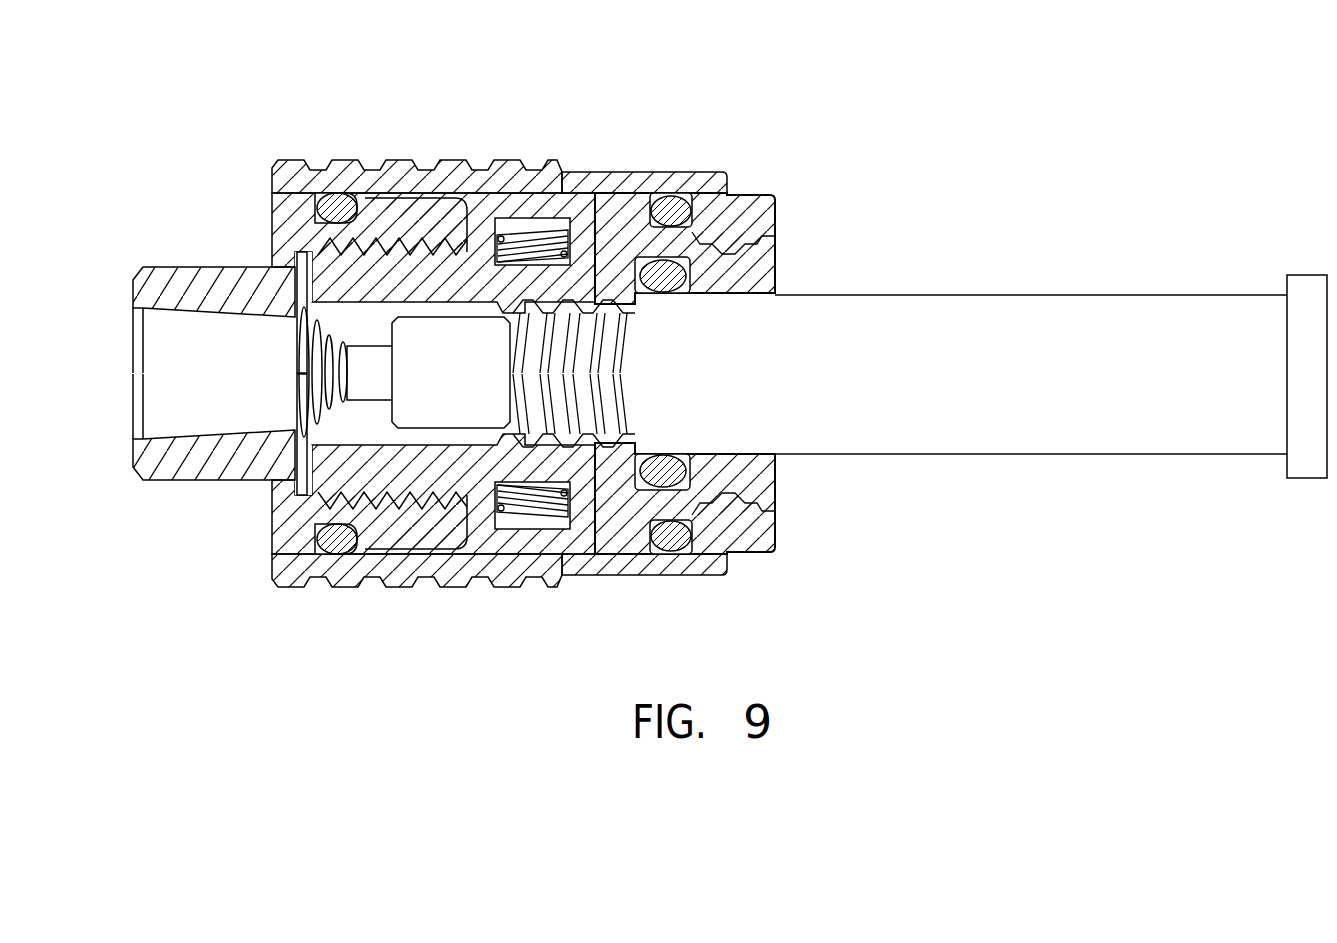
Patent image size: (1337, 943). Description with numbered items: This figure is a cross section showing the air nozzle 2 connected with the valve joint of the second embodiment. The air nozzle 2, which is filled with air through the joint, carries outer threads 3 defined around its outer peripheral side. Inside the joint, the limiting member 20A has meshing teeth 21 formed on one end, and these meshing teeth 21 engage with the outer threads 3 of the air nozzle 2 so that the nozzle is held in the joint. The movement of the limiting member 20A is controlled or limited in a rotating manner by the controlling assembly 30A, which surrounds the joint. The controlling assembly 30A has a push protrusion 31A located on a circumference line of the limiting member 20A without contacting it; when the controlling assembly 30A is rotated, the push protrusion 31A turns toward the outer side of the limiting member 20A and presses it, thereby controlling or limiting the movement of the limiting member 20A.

The controlling assembly 30A is at (397, 157).
The push protrusion 31A is at (527, 167).
The limiting member 20A is at (570, 215).
The outer threads 3 is at (527, 293).
The meshing teeth 21 is at (580, 295).
The air nozzle 2 is at (1048, 295).